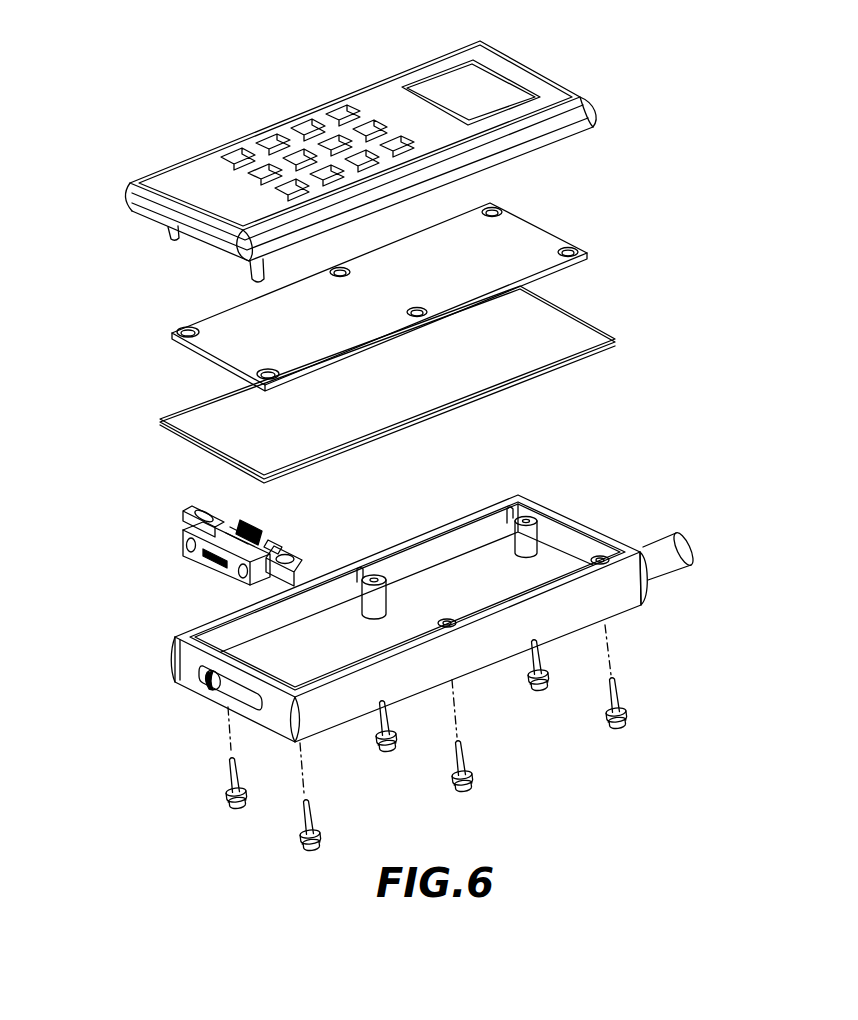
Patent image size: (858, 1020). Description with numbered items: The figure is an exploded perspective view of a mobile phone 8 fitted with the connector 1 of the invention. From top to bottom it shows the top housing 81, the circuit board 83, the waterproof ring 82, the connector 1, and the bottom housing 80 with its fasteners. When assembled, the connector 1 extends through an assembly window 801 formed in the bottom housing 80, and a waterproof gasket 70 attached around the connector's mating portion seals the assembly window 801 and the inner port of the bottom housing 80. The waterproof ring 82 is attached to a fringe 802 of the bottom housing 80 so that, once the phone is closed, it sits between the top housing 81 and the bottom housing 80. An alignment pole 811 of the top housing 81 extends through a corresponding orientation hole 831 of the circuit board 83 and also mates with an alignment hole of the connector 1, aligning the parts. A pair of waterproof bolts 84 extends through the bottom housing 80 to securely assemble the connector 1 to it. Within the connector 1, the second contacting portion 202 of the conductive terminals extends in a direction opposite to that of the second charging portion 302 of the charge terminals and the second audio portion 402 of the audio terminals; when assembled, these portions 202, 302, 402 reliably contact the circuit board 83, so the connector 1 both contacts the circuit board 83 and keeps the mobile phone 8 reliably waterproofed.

The mobile phone 8 is at (777, 642).
The top housing 81 is at (176, 178).
The alignment pole 811 is at (255, 273).
The circuit board 83 is at (222, 320).
The orientation hole 831 is at (270, 374).
The waterproof ring 82 is at (163, 420).
The connector 1 is at (140, 570).
The waterproof gasket 70 is at (190, 520).
The second charging portion 302 is at (214, 514).
The second contacting portion 202 is at (262, 532).
The second audio portion 402 is at (285, 549).
The bottom housing 80 is at (185, 662).
The fringe 802 is at (210, 622).
The assembly window 801 is at (228, 690).
The waterproof bolts 84 is at (305, 838).